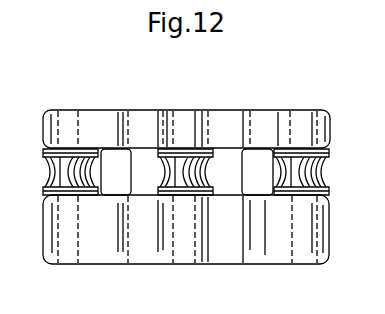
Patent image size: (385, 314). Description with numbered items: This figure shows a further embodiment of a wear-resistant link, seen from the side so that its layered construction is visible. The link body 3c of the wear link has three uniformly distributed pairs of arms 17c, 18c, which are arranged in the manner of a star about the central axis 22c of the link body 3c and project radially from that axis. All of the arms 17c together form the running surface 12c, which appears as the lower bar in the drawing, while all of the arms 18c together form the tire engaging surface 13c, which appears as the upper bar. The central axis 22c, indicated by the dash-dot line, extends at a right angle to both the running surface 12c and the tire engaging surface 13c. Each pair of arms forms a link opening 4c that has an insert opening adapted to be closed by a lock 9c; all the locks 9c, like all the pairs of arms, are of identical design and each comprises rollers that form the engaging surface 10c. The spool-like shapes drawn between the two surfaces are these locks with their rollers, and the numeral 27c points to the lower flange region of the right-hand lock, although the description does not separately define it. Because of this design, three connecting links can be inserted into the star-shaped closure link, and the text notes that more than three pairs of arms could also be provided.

The link body 3c is at (337, 113).
The tire engaging surface 13c is at (130, 112).
The arm 18c is at (280, 125).
The central axis 22c is at (186, 148).
The link opening 4c is at (252, 183).
The engaging surface 10c is at (277, 178).
The lock 9c is at (313, 191).
The roller flange 27c is at (345, 172).
The running surface 12c is at (240, 265).
The arm 17c is at (265, 255).